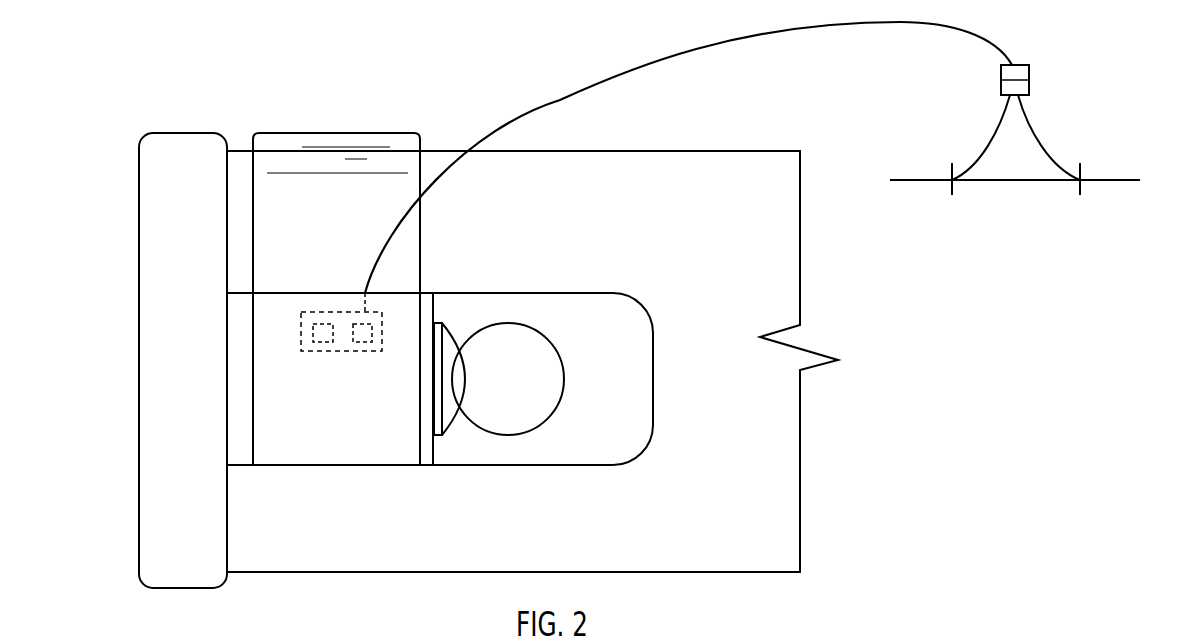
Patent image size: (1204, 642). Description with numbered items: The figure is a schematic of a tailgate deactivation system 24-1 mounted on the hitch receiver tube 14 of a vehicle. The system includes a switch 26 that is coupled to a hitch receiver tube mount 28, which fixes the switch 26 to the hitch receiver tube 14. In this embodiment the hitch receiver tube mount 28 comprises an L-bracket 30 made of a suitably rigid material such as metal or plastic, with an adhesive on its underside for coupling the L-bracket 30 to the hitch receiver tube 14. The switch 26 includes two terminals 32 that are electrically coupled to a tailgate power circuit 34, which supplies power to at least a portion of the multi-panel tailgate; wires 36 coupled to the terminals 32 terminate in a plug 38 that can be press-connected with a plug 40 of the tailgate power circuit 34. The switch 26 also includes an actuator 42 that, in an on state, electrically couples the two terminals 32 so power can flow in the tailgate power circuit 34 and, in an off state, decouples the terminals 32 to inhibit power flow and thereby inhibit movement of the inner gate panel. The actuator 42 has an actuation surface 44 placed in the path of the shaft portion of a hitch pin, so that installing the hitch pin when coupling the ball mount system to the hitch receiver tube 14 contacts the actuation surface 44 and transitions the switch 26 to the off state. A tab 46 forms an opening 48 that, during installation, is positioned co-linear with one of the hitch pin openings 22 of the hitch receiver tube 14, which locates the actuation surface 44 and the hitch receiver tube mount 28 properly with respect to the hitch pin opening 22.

The tailgate deactivation system 24-1 is at (397, 70).
The hitch receiver tube 14 is at (710, 160).
The hitch receiver tube mount 28 is at (270, 203).
The L-bracket 30 is at (407, 233).
The switch 26 is at (372, 450).
The tab 46 is at (610, 445).
The actuator 42 is at (458, 435).
The actuation surface 44 is at (467, 382).
The opening 48 is at (547, 390).
The hitch pin opening 22 is at (523, 340).
The terminals 32 is at (323, 342).
The wires 36 is at (773, 25).
The plug 38 is at (1023, 63).
The plug 40 is at (1000, 87).
The tailgate power circuit 34 is at (1148, 78).